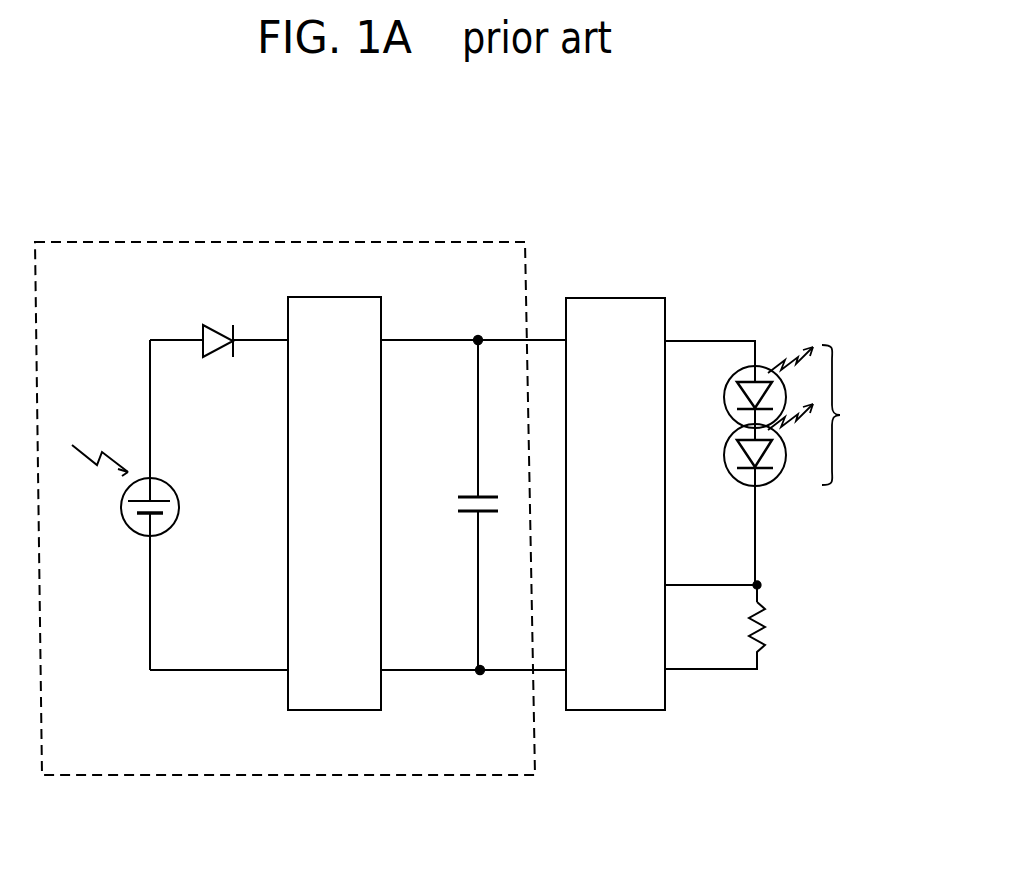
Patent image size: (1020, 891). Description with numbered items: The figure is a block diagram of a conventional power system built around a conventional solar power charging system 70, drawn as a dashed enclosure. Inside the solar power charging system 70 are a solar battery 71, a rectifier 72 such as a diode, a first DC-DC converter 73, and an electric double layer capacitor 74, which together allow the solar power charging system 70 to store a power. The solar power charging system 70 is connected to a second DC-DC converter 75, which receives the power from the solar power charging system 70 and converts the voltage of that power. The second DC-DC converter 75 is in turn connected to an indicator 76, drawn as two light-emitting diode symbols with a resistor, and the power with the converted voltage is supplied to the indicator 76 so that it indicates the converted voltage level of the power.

The solar power charging system 70 is at (247, 242).
The solar battery 71 is at (122, 527).
The rectifier 72 is at (215, 357).
The first DC-DC converter 73 is at (332, 297).
The electric double layer capacitor 74 is at (466, 515).
The second DC-DC converter 75 is at (608, 298).
The indicator 76 is at (840, 415).